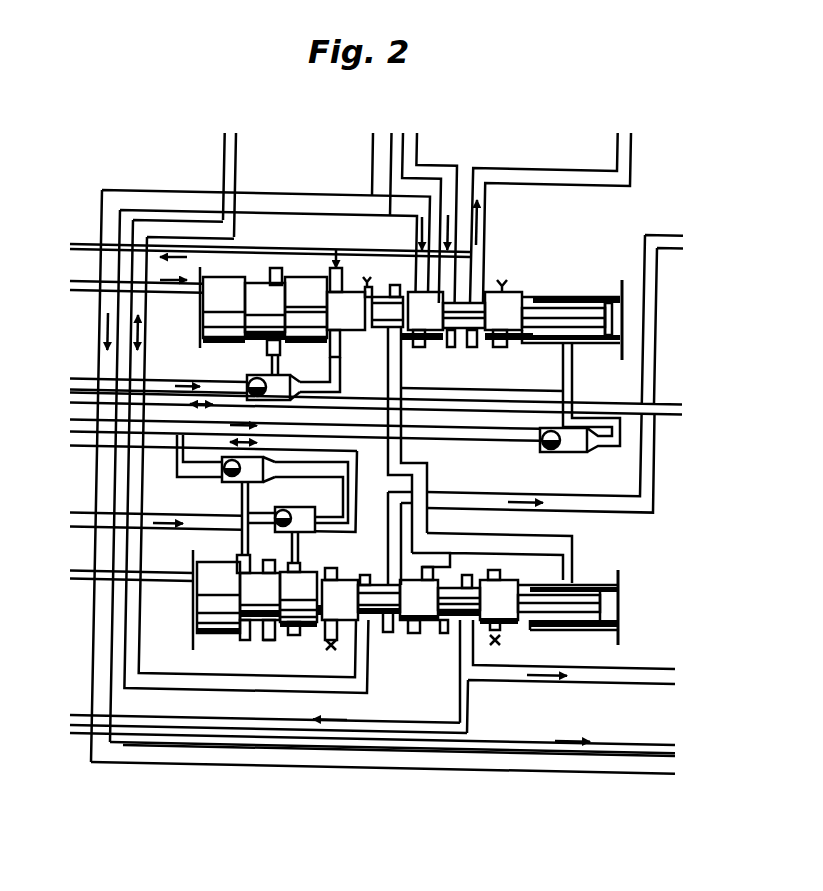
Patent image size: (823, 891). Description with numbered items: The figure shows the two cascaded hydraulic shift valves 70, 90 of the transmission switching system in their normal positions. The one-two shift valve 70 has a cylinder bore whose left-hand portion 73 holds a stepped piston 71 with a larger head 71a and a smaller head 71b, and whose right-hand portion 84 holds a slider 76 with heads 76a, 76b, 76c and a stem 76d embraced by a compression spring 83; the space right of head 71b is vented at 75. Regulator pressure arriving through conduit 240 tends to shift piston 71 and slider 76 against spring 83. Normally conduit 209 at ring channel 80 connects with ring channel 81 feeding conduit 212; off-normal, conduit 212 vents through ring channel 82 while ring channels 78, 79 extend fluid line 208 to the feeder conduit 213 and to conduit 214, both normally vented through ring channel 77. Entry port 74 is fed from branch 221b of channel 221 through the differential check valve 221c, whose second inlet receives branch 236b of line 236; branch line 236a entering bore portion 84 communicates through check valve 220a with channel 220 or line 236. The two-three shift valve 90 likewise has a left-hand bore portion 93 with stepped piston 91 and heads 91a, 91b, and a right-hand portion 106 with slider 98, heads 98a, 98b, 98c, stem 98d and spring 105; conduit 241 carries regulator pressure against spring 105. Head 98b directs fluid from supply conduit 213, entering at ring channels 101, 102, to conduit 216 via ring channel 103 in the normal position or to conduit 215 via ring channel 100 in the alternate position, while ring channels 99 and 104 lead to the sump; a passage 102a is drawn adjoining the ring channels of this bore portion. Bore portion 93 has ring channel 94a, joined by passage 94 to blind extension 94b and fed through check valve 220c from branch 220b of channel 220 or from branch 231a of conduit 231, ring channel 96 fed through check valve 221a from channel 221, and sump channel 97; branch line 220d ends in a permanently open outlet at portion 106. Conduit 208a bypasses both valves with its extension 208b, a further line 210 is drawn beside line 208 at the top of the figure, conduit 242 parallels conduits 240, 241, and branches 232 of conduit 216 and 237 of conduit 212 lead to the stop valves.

The shift valve 70 is at (392, 299).
The stepped piston 71 is at (262, 303).
The piston head 71a is at (240, 308).
The piston head 71b is at (323, 308).
The left-hand bore portion 73 is at (199, 332).
The entry port 74 is at (275, 268).
The vent 75 is at (336, 250).
The slider 76 is at (460, 312).
The slider head 76a is at (362, 319).
The slider head 76b is at (441, 319).
The slider head 76c is at (518, 319).
The stem 76d is at (577, 310).
The ring channel 77 is at (369, 340).
The ring channel 78 is at (418, 348).
The ring channel 79 is at (450, 348).
The ring channel 80 is at (471, 348).
The ring channel 81 is at (488, 341).
The ring channel 82 is at (503, 348).
The compression spring 83 is at (540, 346).
The right-hand bore portion 84 is at (612, 342).
The shift valve 90 is at (409, 622).
The stepped piston 91 is at (253, 595).
The piston head 91a is at (236, 595).
The piston head 91b is at (313, 595).
The left-hand bore portion 93 is at (192, 617).
The passage 94 is at (262, 641).
The ring channel 94a is at (243, 637).
The blind extension 94b is at (269, 641).
The ring channel 96 is at (295, 635).
The ring channel 97 is at (332, 640).
The slider 98 is at (457, 600).
The slider head 98a is at (356, 603).
The slider head 98b is at (435, 603).
The slider head 98c is at (515, 603).
The stem 98d is at (550, 630).
The ring channel 99 is at (364, 575).
The ring channel 100 is at (387, 632).
The ring channel 101 is at (415, 633).
The ring channel 102 is at (443, 633).
The passage 102a is at (438, 550).
The ring channel 103 is at (466, 575).
The ring channel 104 is at (498, 633).
The compression spring 105 is at (578, 630).
The right-hand bore portion 106 is at (605, 607).
The fluid line 208 is at (372, 153).
The conduit 208a is at (161, 192).
The extension 208b is at (570, 766).
The conduit 209 is at (426, 168).
The fluid line 210 is at (237, 159).
The conduit 212 is at (525, 165).
The supply conduit 213 is at (420, 478).
The conduit 214 is at (670, 397).
The conduit 215 is at (603, 506).
The conduit 216 is at (638, 672).
The channel 220 is at (313, 432).
The differential check valve 220a is at (549, 449).
The branch 220b is at (180, 473).
The differential check valve 220c is at (230, 473).
The branch line 220d is at (574, 556).
The channel 221 is at (88, 516).
The differential check valve 221a is at (282, 514).
The branch 221b is at (163, 380).
The differential check valve 221c is at (250, 382).
The conduit 231 is at (90, 447).
The branch 231a is at (317, 470).
The branch 232 is at (77, 714).
The line 236 is at (162, 408).
The branch line 236a is at (568, 378).
The branch 236b is at (331, 387).
The branch 237 is at (302, 249).
The conduit 240 is at (92, 291).
The conduit 241 is at (88, 582).
The conduit 242 is at (508, 741).